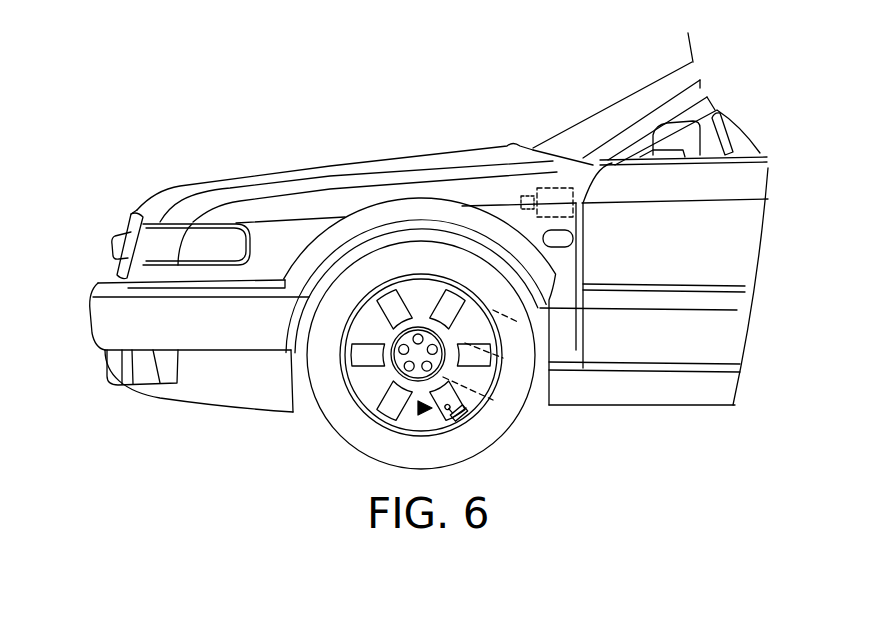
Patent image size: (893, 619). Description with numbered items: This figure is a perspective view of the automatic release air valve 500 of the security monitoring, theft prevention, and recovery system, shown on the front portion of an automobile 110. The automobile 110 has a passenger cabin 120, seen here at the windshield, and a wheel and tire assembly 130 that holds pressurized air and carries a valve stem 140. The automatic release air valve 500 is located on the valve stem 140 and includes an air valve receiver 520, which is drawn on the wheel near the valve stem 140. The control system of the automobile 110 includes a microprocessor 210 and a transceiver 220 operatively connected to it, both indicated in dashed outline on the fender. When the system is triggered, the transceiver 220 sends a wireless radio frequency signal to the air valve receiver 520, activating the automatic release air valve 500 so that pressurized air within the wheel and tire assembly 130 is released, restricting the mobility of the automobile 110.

The automobile 110 is at (157, 211).
The passenger cabin 120 is at (688, 112).
The wheel and tire assembly 130 is at (503, 358).
The valve stem 140 is at (447, 404).
The microprocessor 210 is at (537, 190).
The transceiver 220 is at (523, 198).
The automatic release air valve 500 is at (418, 408).
The air valve receiver 520 is at (457, 416).